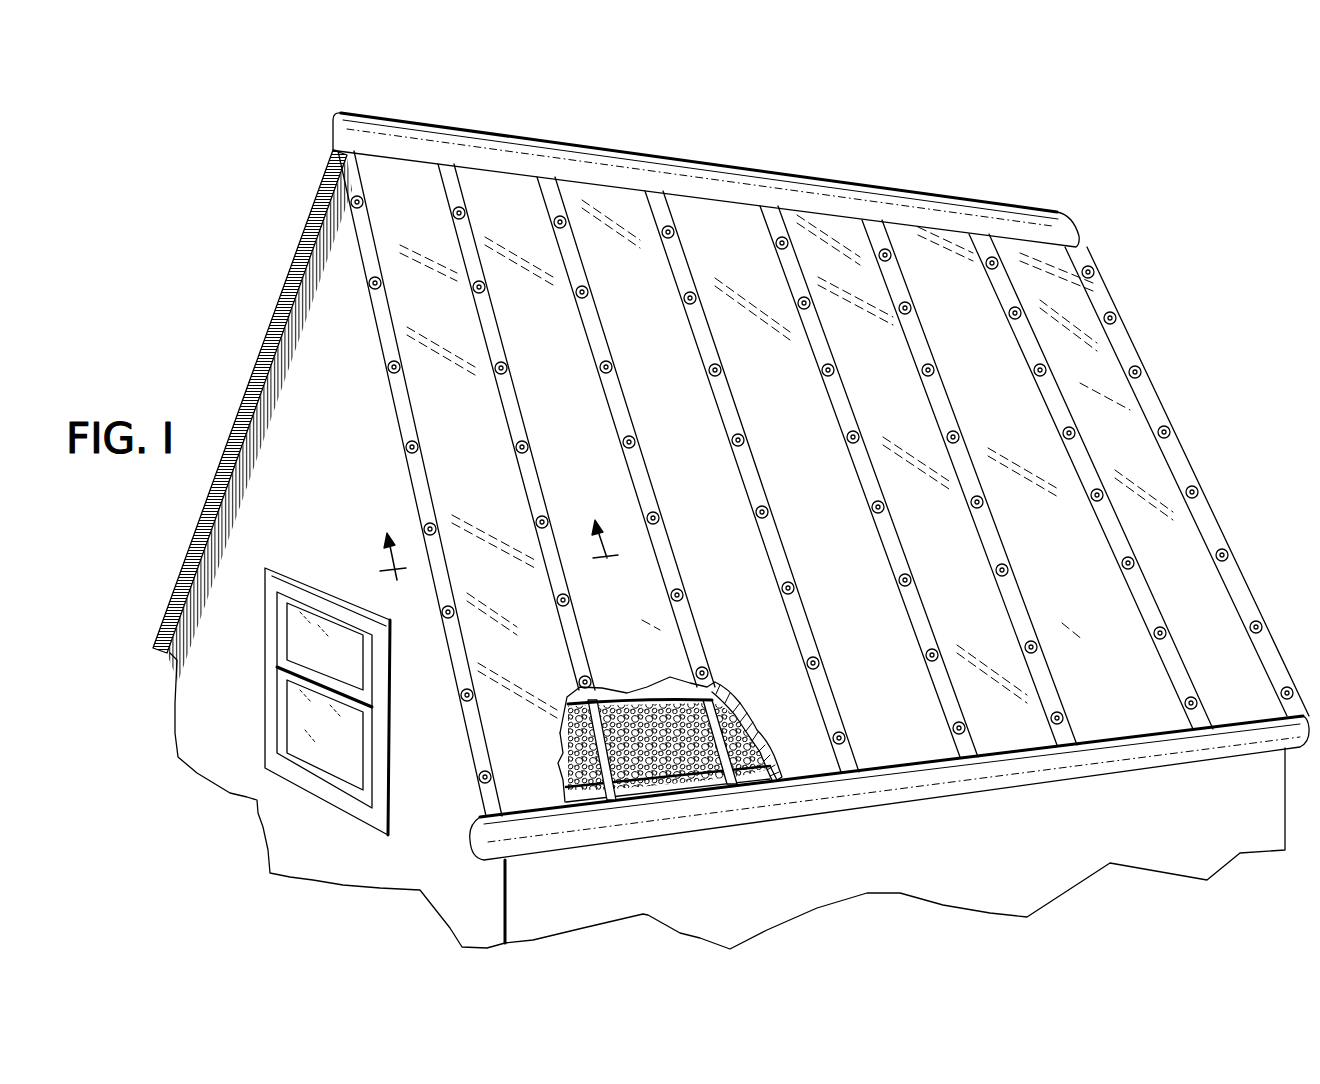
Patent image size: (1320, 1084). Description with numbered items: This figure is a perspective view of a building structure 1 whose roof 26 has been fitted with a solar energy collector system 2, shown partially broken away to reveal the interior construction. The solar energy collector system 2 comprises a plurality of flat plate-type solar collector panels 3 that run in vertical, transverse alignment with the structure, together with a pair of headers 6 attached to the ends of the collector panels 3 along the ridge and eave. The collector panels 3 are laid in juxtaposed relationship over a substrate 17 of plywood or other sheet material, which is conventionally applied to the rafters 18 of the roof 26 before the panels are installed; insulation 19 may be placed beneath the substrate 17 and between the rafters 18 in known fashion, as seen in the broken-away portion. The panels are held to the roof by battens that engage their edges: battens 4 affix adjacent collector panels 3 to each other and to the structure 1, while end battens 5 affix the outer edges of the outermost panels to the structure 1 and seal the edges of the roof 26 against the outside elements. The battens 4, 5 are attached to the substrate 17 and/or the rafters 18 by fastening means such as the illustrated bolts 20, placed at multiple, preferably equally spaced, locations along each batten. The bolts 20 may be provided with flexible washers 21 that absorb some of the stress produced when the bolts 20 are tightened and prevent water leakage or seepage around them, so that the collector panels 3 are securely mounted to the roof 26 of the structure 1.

The building structure 1 is at (175, 734).
The solar energy collector system 2 is at (927, 268).
The solar collector panels 3 is at (492, 197).
The battens 4 is at (501, 563).
The end battens 5 is at (404, 428).
The headers 6 is at (903, 211).
The substrate 17 is at (623, 692).
The rafters 18 is at (622, 800).
The insulation 19 is at (687, 755).
The bolts 20 is at (358, 210).
The flexible washers 21 is at (357, 200).
The roof 26 is at (292, 268).